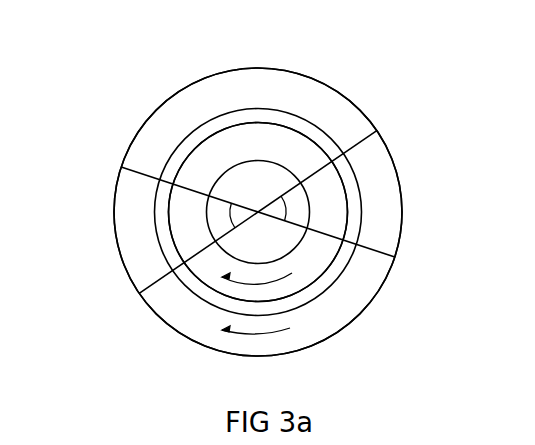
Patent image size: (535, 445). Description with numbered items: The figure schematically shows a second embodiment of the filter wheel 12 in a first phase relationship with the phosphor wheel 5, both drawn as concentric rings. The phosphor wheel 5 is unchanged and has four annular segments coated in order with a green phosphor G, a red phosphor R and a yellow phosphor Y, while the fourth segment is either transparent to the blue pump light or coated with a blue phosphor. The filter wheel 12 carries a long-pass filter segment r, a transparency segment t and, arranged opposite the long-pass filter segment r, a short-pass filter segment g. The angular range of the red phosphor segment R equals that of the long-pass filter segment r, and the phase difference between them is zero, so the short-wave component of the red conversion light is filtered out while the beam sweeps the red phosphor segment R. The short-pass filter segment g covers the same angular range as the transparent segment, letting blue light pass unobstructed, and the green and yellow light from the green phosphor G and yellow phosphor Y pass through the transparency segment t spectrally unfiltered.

The filter wheel 12 is at (237, 92).
The phosphor wheel 5 is at (258, 180).
The green phosphor segment G is at (212, 148).
The transparency segment t is at (322, 97).
The long-pass filter segment r is at (373, 152).
The red phosphor segment R is at (333, 202).
The short-pass filter segment g is at (125, 200).
The yellow phosphor segment Y is at (268, 288).